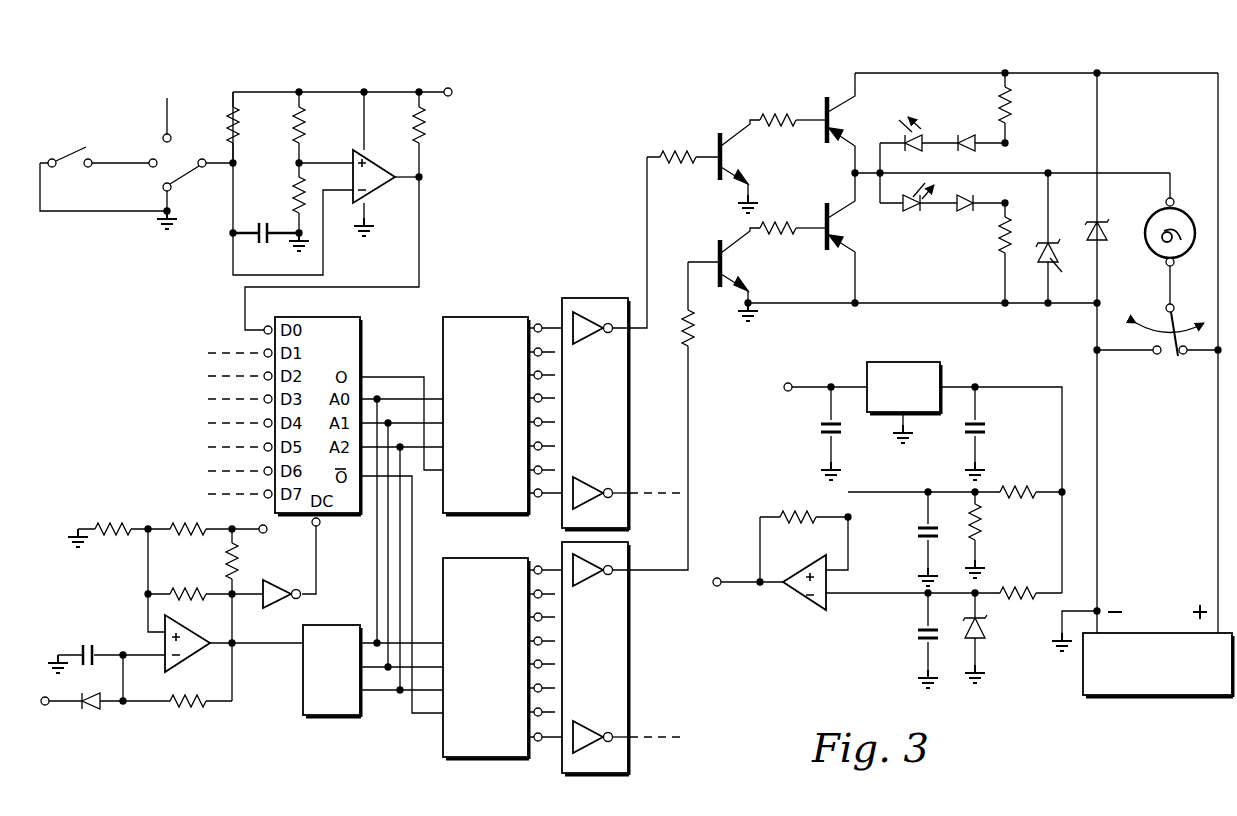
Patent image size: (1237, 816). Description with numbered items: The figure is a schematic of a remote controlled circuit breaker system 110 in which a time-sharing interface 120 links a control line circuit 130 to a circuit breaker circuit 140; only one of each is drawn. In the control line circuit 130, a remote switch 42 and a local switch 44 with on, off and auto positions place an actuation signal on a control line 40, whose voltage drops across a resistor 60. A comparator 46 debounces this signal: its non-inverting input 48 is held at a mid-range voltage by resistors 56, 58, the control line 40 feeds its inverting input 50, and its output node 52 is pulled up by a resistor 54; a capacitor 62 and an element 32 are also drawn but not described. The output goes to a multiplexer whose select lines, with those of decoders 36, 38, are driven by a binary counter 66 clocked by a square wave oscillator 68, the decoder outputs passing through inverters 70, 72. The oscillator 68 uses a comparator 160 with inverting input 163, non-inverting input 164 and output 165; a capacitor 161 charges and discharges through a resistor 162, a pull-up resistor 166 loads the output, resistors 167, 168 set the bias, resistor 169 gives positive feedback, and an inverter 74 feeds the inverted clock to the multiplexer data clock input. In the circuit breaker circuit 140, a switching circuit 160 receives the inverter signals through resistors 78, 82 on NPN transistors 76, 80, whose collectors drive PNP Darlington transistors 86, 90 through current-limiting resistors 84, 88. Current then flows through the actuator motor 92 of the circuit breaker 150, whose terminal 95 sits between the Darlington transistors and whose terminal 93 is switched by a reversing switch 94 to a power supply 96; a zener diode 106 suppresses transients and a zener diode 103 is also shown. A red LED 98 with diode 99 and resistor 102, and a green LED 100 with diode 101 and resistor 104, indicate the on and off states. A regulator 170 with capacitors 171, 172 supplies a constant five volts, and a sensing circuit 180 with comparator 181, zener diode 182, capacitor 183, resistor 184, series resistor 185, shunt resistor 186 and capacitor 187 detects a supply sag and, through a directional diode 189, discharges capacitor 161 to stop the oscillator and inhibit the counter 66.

The control line circuit 130 is at (216, 80).
The remote switch 42 is at (74, 154).
The control line 40 is at (224, 150).
The local switch 44 is at (180, 178).
The resistor 60 is at (228, 122).
The resistor 56 is at (294, 125).
The resistor 58 is at (295, 192).
The capacitor 62 is at (258, 222).
The comparator 46 is at (382, 166).
The non-inverting input 48 is at (353, 160).
The inverting input 50 is at (356, 198).
The node 52 is at (421, 177).
The pull-up resistor 54 is at (424, 128).
The comparator circuit 32 is at (343, 244).
The decoder 36 is at (485, 316).
The time-sharing interface 120 is at (575, 466).
The inverter 70 is at (586, 346).
The inverter 72 is at (586, 588).
The decoder 38 is at (485, 557).
The binary counter 66 is at (333, 717).
The square wave oscillator 68 is at (245, 713).
The remote controlled circuit breaker system 110 is at (144, 511).
The resistor 168 is at (119, 546).
The resistor 167 is at (201, 523).
The pull-up resistor 166 is at (226, 561).
The resistor 169 is at (182, 592).
The inverter 74 is at (278, 589).
The comparator 160 is at (194, 664).
The capacitor 161 is at (85, 645).
The inverting input 163 is at (128, 652).
The non-inverting input 164 is at (147, 622).
The output 165 is at (216, 640).
The directional diode 189 is at (86, 710).
The resistor 162 is at (190, 712).
The resistor 78 is at (684, 150).
The NPN transistor 76 is at (736, 158).
The current-limiting resistor 84 is at (786, 117).
The PNP Darlington transistor 86 is at (832, 120).
The current limiting resistor 88 is at (790, 225).
The PNP Darlington transistor 90 is at (833, 226).
The NPN transistor 80 is at (732, 264).
The resistor 82 is at (696, 328).
The circuit breaker circuit 140 is at (878, 312).
The resistor 102 is at (1013, 108).
The red LED 98 is at (918, 132).
The directional diode 99 is at (962, 133).
The green LED 100 is at (918, 212).
The directional diode 101 is at (973, 212).
The resistor 104 is at (1000, 245).
The zener diode 106 is at (1052, 270).
The zener diode 103 is at (1092, 220).
The circuit breaker 150 is at (1178, 160).
The actuator motor 92 is at (1192, 210).
The terminal 95 is at (1166, 200).
The terminal 93 is at (1166, 266).
The reversing switch 94 is at (1180, 324).
The regulator 170 is at (905, 361).
The capacitor 172 is at (821, 426).
The capacitor 171 is at (985, 426).
The series resistor 185 is at (1020, 485).
The capacitor 187 is at (916, 531).
The shunt resistor 186 is at (985, 522).
The comparator 181 is at (794, 596).
The resistor 184 is at (1020, 587).
The capacitor 183 is at (916, 634).
The zener diode 182 is at (985, 632).
The voltage sensing circuit 180 is at (878, 644).
The power supply 96 is at (1154, 698).